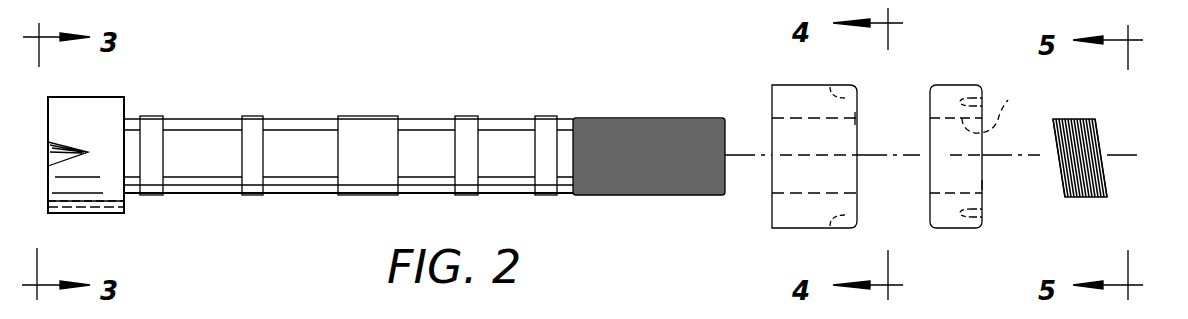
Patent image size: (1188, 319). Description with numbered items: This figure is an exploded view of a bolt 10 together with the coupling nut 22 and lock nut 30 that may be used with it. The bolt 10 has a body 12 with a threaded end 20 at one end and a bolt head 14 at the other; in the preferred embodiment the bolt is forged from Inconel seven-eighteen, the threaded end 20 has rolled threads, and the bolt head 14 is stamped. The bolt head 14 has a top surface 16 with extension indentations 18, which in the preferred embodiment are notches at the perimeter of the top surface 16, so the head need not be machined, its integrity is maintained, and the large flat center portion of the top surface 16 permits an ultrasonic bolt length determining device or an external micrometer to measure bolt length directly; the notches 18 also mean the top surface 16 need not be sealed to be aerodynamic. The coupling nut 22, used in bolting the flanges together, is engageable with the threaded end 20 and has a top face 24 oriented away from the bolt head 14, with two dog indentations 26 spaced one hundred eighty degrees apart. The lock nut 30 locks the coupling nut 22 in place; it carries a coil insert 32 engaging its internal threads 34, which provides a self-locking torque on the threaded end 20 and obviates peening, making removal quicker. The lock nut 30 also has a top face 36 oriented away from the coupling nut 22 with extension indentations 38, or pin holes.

The bolt 10 is at (466, 62).
The body 12 is at (375, 118).
The bolt head 14 is at (86, 98).
The top surface 16 is at (48, 123).
The extension indentations 18 is at (53, 160).
The threaded end 20 is at (642, 118).
The coupling nut 22 is at (806, 85).
The top face 24 is at (857, 118).
The dog indentations 26 is at (858, 87).
The lock nut 30 is at (955, 85).
The coil insert 32 is at (1075, 118).
The internal threads 34 is at (1000, 105).
The top face 36 is at (982, 182).
The extension indentations 38 is at (982, 210).